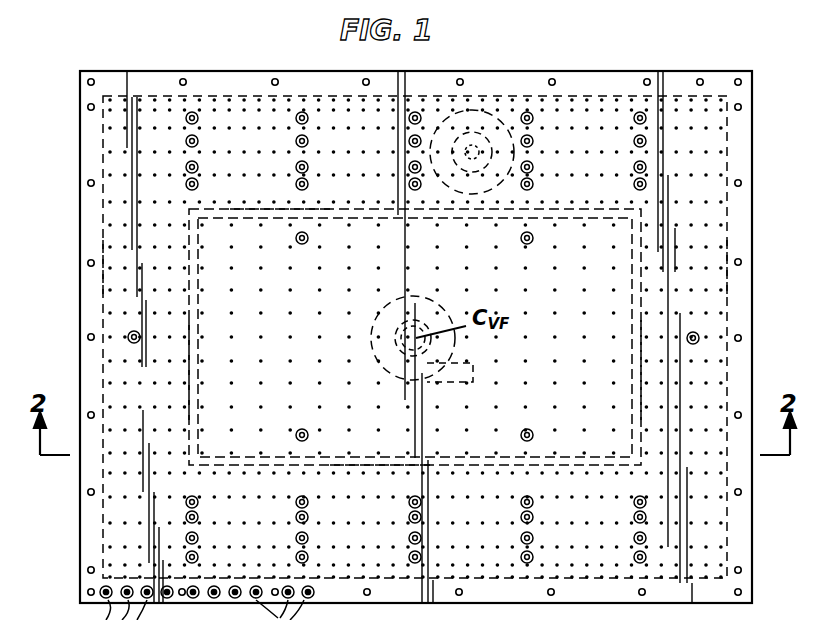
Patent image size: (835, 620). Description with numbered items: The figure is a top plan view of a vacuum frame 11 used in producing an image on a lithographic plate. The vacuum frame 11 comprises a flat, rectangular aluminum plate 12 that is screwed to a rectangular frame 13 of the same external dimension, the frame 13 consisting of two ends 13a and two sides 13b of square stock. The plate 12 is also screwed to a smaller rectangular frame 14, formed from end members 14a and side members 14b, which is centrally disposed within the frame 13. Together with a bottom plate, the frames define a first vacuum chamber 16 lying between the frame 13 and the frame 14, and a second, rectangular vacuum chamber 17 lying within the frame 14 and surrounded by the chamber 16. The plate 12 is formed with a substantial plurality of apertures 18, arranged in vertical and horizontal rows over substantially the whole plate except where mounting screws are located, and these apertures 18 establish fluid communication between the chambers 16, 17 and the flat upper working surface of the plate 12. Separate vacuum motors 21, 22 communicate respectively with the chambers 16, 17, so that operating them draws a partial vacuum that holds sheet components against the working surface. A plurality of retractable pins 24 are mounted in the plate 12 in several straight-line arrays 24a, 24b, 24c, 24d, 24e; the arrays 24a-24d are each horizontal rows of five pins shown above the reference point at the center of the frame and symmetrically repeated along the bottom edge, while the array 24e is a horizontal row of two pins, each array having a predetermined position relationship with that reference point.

The vacuum frame 11 is at (696, 62).
The plate 12 is at (661, 82).
The frame 13 is at (88, 130).
The ends 13a is at (86, 277).
The sides 13b is at (242, 86).
The frame 14 is at (426, 222).
The end members 14a is at (180, 360).
The side members 14b is at (292, 210).
The first vacuum chamber 16 is at (400, 72).
The second vacuum chamber 17 is at (333, 268).
The apertures 18 is at (156, 98).
The vacuum motor 21 is at (480, 108).
The vacuum motor 22 is at (440, 306).
The retractable pins 24 is at (634, 141).
The array of retractable pins 24a is at (646, 184).
The array of retractable pins 24b is at (298, 166).
The array of retractable pins 24c is at (308, 138).
The array of retractable pins 24d is at (306, 112).
The array of retractable pins 24e is at (128, 340).